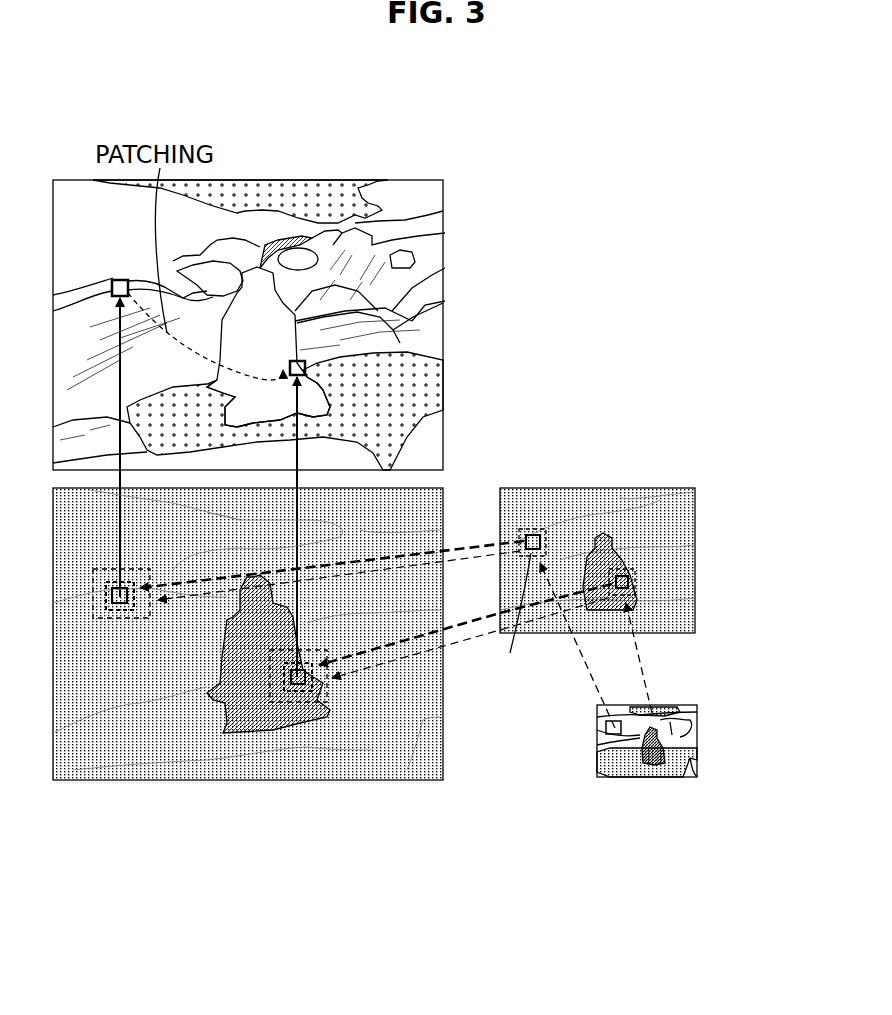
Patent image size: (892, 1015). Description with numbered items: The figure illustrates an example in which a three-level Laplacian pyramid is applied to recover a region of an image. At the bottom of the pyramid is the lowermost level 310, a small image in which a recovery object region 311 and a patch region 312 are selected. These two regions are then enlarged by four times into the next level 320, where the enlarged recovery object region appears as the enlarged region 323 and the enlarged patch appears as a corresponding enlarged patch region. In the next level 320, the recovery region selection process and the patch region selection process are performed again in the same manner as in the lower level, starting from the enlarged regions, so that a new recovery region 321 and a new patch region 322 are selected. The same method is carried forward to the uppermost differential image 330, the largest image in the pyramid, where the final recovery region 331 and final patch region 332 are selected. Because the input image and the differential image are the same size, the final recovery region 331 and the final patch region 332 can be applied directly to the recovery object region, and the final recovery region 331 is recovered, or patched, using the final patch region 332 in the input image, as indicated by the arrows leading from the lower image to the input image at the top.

The lowermost level g2 310 is at (697, 795).
The recovery object region t2 311 is at (685, 855).
The patch region p2 312 is at (617, 734).
The level l1 320 is at (660, 581).
The region t1 321 is at (638, 580).
The region p1 322 is at (531, 533).
The region t12 323 is at (636, 583).
The uppermost differential image 330 is at (262, 699).
The region t0 331 is at (298, 692).
The region p0 332 is at (120, 605).